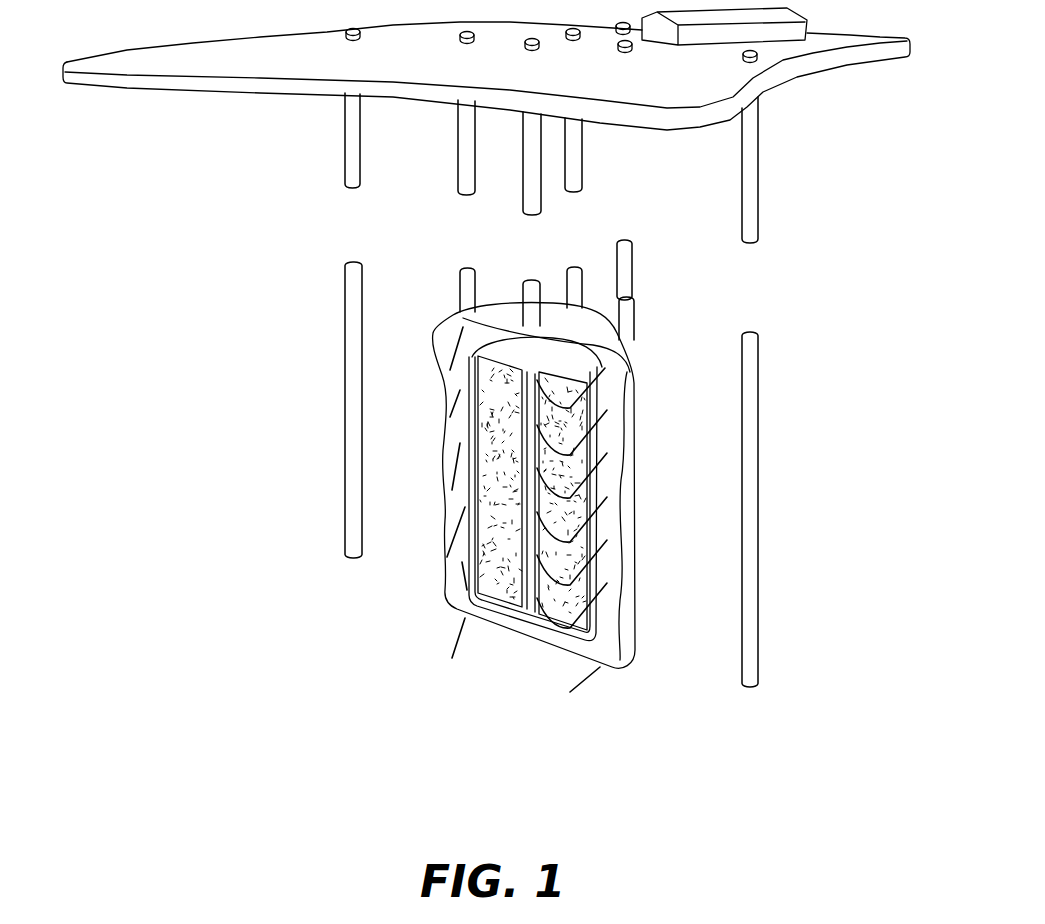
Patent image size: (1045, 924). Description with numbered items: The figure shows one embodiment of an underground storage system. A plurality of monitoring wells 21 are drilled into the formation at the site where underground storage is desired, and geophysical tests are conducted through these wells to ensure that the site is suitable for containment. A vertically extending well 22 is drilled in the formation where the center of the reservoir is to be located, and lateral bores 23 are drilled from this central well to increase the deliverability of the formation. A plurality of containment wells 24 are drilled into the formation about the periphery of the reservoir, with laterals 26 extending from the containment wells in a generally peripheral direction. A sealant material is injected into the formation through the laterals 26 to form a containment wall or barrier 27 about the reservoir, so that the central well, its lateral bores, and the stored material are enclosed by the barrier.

The monitoring wells 21 is at (760, 193).
The vertically extending well 22 is at (523, 188).
The lateral bores 23 is at (573, 487).
The containment wells 24 is at (458, 153).
The laterals 26 is at (598, 497).
The containment wall or barrier 27 is at (627, 367).